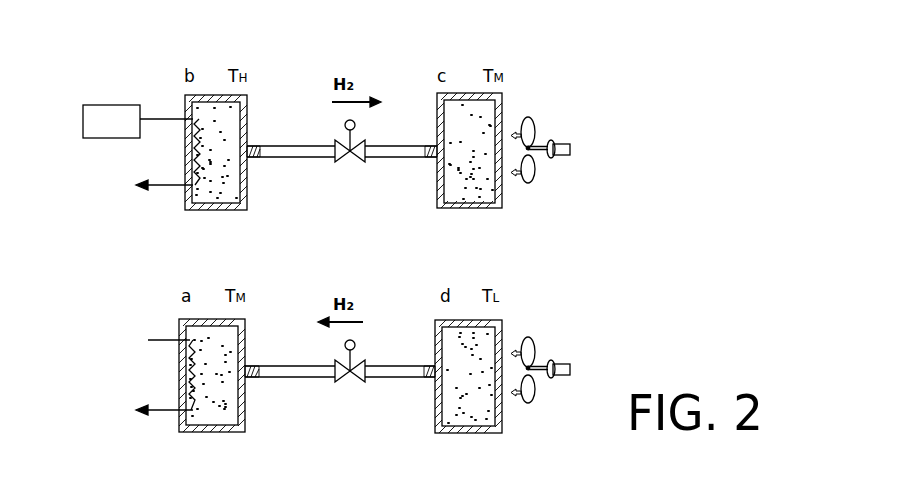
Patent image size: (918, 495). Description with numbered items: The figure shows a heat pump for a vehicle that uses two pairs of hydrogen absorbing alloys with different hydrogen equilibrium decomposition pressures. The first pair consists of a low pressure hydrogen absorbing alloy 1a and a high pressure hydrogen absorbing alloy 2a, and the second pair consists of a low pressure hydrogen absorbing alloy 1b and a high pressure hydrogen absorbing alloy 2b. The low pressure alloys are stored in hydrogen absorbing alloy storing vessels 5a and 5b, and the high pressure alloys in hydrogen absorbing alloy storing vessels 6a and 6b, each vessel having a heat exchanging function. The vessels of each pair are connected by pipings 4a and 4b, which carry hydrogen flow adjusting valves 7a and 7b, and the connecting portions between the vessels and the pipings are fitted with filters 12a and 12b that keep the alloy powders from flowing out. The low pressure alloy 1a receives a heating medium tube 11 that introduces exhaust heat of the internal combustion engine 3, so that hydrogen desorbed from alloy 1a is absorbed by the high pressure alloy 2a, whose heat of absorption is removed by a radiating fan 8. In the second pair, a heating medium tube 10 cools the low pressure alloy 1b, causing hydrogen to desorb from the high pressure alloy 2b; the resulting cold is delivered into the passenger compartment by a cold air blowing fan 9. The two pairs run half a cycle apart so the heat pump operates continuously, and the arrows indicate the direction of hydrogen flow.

The low pressure hydrogen absorbing alloy MH1 1a is at (223, 192).
The low pressure hydrogen absorbing alloy MH1 1b is at (218, 420).
The high pressure hydrogen absorbing alloy MH2 2a is at (472, 208).
The high pressure hydrogen absorbing alloy MH2 2b is at (473, 420).
The internal combustion engine 3 is at (124, 105).
The piping 4a is at (283, 147).
The piping 4b is at (278, 365).
The hydrogen absorbing alloy storing vessel 5a is at (247, 118).
The hydrogen absorbing alloy storing vessel 5b is at (233, 318).
The hydrogen absorbing alloy storing vessel 6a is at (500, 98).
The hydrogen absorbing alloy storing vessel 6b is at (498, 318).
The hydrogen flow adjusting valve 7a is at (352, 162).
The hydrogen flow adjusting valve 7b is at (353, 380).
The radiating fan 8 is at (528, 186).
The cold air blowing fan 9 is at (533, 341).
The heating medium tube 10 is at (168, 340).
The heating medium tube 11 is at (163, 187).
The filter 12a is at (257, 157).
The filter 12b is at (251, 375).